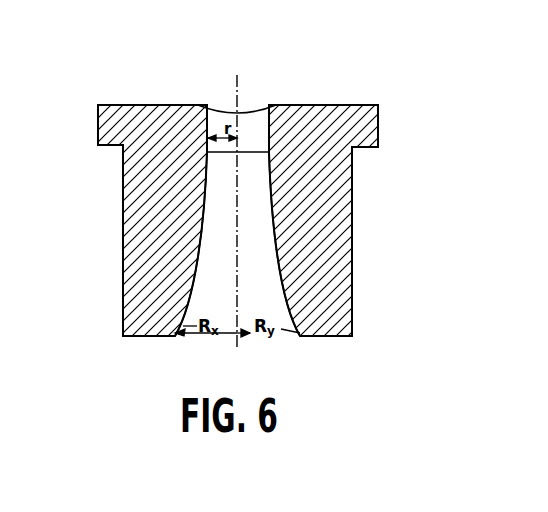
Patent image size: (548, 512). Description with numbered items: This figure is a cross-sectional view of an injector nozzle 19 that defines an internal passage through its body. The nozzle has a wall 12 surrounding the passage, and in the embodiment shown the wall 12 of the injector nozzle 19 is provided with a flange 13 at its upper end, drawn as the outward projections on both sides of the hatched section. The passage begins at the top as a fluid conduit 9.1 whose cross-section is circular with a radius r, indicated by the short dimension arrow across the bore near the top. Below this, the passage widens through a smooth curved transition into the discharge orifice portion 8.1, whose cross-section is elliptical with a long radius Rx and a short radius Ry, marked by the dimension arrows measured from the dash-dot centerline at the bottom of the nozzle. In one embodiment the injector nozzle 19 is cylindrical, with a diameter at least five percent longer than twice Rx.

The injector nozzle 19 is at (384, 64).
The wall 12 is at (127, 245).
The flange 13 is at (108, 123).
The fluid conduit 9.1 is at (294, 128).
The discharge orifice portion 8.1 is at (275, 251).